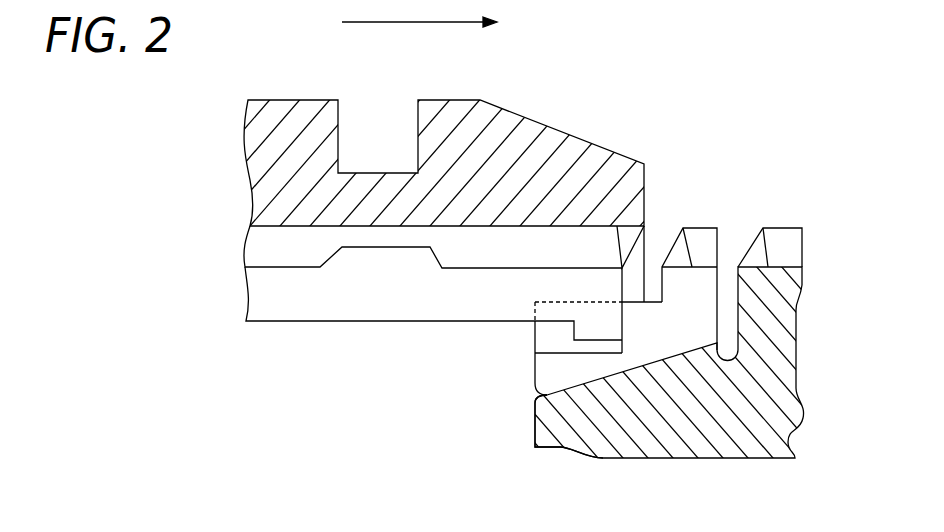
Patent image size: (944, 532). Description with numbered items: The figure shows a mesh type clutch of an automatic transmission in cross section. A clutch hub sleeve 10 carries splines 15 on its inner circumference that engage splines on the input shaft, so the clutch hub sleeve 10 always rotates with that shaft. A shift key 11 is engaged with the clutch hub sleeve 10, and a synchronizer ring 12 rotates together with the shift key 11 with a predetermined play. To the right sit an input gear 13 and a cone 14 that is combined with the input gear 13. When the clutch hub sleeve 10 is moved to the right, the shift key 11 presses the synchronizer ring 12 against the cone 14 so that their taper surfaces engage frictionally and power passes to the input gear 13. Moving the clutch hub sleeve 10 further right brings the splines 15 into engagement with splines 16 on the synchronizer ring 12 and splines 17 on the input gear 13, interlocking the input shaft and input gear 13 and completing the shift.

The clutch hub sleeve 10 is at (565, 137).
The shift key 11 is at (326, 310).
The synchronizer ring 12 is at (545, 370).
The input gear 13 is at (740, 452).
The cone 14 is at (547, 414).
The splines 15 is at (255, 249).
The splines 16 is at (703, 238).
The splines 17 is at (787, 238).